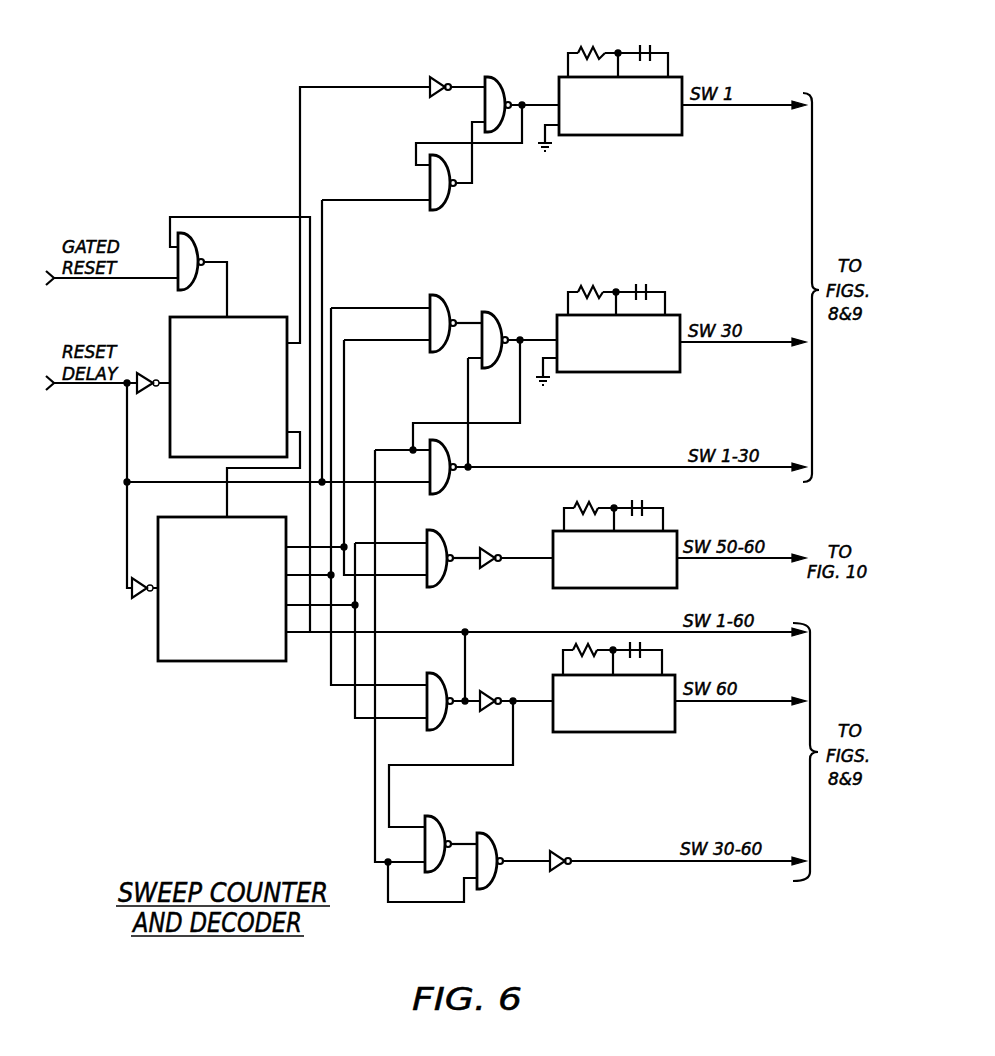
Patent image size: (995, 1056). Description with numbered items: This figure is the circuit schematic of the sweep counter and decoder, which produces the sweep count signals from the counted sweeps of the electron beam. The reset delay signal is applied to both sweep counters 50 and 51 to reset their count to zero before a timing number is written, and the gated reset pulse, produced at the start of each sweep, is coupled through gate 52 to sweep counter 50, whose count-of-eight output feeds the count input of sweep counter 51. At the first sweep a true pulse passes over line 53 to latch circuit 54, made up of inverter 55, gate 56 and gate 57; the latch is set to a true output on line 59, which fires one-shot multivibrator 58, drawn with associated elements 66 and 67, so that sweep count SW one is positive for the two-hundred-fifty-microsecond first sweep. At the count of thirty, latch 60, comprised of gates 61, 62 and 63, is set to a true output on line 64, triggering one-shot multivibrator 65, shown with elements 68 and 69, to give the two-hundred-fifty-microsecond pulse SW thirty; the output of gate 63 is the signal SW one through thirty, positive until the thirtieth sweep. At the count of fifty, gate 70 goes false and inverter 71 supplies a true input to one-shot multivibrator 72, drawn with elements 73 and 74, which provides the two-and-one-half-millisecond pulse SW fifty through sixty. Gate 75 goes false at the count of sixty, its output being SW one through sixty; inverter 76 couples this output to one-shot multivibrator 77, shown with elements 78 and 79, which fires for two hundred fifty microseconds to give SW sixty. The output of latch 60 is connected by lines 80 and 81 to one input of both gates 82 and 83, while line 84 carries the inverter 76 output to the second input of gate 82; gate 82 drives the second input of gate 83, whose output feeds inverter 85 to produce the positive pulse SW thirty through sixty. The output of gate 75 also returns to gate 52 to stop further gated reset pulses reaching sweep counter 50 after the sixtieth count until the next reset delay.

The sweep counter 50 is at (238, 315).
The sweep counter 51 is at (157, 644).
The gate 52 is at (198, 245).
The line 53 is at (335, 86).
The latch circuit 54 is at (487, 124).
The inverter 55 is at (434, 77).
The gate 56 is at (498, 83).
The gate 57 is at (447, 200).
The one-shot multivibrator 58 is at (637, 71).
The line 59 is at (550, 102).
The latch 60 is at (614, 374).
The gate 61 is at (438, 295).
The gate 62 is at (495, 318).
The gate 63 is at (448, 482).
The line 64 is at (548, 338).
The one-shot multivibrator 65 is at (635, 307).
The resistor 66 is at (595, 45).
The capacitor 67 is at (648, 45).
The resistor 68 is at (590, 283).
The capacitor 69 is at (643, 283).
The gate 70 is at (440, 533).
The inverter 71 is at (492, 547).
The one-shot multivibrator 72 is at (623, 527).
The resistor 73 is at (580, 497).
The capacitor 74 is at (638, 500).
The gate 75 is at (438, 675).
The inverter 76 is at (483, 695).
The one-shot multivibrator 77 is at (633, 668).
The resistor 78 is at (590, 643).
The capacitor 79 is at (642, 643).
The line 80 is at (523, 412).
The line 81 is at (375, 513).
The gate 82 is at (440, 828).
The gate 83 is at (490, 830).
The line 84 is at (492, 765).
The inverter 85 is at (565, 850).